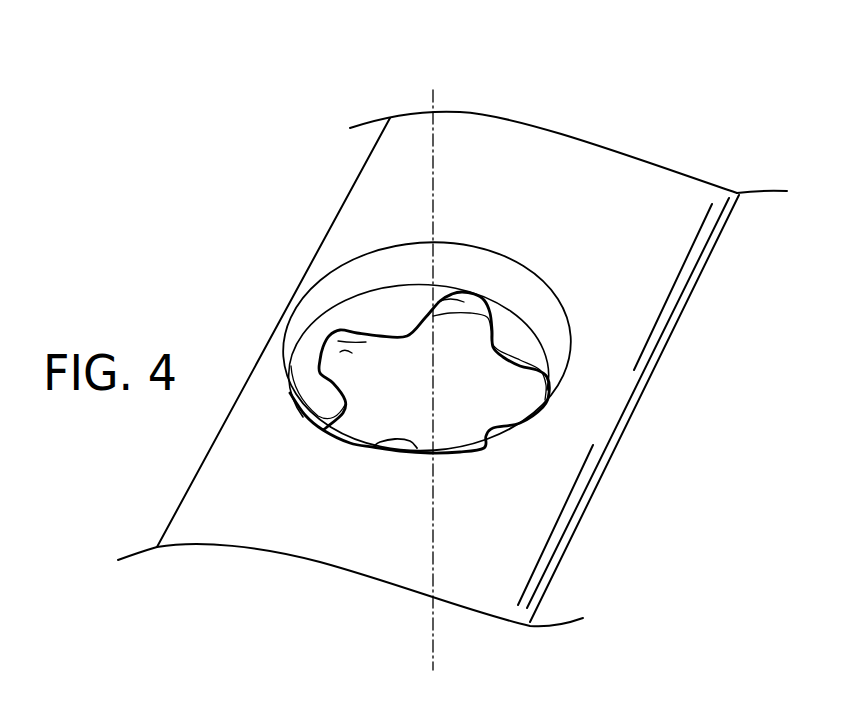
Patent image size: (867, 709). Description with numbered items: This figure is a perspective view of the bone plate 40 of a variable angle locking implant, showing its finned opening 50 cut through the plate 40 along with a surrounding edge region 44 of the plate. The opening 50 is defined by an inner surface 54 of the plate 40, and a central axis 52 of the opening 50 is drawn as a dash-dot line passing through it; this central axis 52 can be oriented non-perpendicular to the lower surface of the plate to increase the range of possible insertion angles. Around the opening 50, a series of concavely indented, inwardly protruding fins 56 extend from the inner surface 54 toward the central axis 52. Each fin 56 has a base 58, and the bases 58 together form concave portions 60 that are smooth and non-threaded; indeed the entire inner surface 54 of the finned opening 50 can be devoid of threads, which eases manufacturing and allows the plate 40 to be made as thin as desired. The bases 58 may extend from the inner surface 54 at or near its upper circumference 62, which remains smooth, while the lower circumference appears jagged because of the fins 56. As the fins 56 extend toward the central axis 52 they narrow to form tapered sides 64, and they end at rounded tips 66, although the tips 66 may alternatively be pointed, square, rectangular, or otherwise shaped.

The plate 40 is at (588, 232).
The flange edge 44 is at (660, 235).
The opening 50 is at (479, 405).
The central axis 52 is at (432, 102).
The inner surface 54 is at (340, 352).
The fins 56 is at (389, 324).
The base 58 is at (383, 282).
The concave portions 60 is at (290, 366).
The upper circumference 62 is at (558, 345).
The tapered sides 64 is at (443, 300).
The rounded tips 66 is at (410, 330).